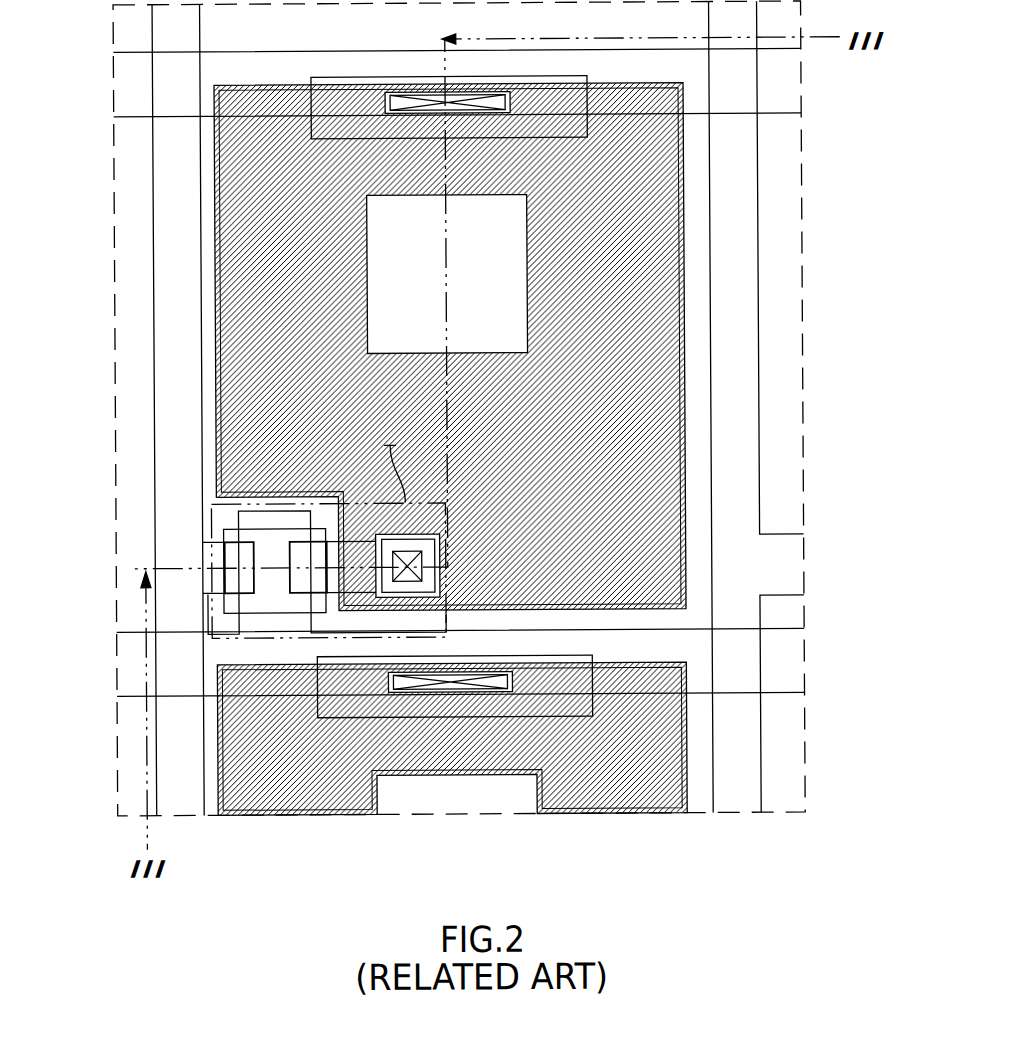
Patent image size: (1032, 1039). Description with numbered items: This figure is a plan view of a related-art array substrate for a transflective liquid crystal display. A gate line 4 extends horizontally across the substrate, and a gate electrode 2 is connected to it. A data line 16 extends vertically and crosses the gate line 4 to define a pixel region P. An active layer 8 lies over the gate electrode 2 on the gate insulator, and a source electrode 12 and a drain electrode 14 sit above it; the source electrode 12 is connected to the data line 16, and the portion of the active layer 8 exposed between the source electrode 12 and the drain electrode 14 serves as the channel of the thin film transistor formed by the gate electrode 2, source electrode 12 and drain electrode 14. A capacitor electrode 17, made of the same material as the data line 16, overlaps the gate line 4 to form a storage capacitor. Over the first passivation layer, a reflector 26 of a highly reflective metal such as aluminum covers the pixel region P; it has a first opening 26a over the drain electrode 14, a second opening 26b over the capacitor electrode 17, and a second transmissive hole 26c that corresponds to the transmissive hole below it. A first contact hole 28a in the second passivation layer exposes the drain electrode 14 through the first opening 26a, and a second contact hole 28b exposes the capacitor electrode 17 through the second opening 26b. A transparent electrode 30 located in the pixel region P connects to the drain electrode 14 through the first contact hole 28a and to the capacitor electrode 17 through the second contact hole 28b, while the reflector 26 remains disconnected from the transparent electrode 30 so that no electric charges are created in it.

The gate electrode 2 is at (276, 506).
The gate line 4 is at (786, 631).
The active layer 8 is at (275, 596).
The source electrode 12 is at (252, 560).
The drain electrode 14 is at (448, 566).
The data line 16 is at (760, 398).
The capacitor electrode 17 is at (492, 718).
The reflector 26 is at (216, 320).
The first opening 26a is at (447, 542).
The second opening 26b is at (510, 674).
The second transmissive hole 26c is at (513, 233).
The first contact hole 28a is at (404, 597).
The second contact hole 28b is at (428, 698).
The transparent electrode 30 is at (216, 241).
The pixel region P is at (700, 338).